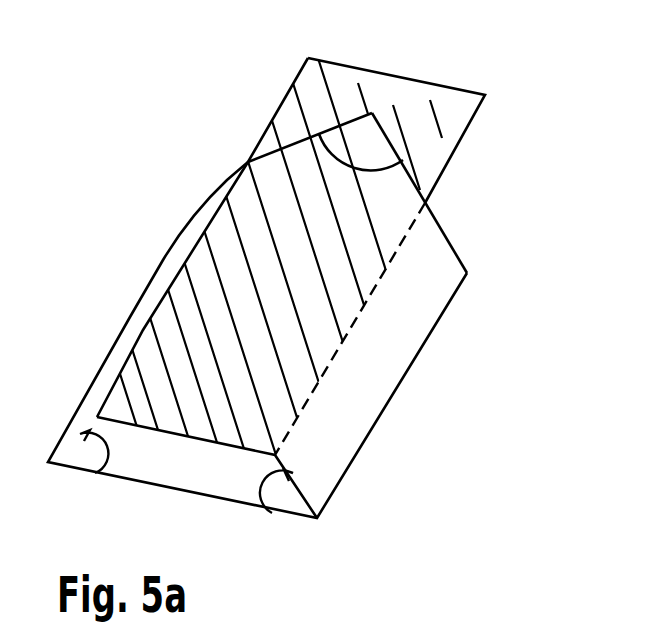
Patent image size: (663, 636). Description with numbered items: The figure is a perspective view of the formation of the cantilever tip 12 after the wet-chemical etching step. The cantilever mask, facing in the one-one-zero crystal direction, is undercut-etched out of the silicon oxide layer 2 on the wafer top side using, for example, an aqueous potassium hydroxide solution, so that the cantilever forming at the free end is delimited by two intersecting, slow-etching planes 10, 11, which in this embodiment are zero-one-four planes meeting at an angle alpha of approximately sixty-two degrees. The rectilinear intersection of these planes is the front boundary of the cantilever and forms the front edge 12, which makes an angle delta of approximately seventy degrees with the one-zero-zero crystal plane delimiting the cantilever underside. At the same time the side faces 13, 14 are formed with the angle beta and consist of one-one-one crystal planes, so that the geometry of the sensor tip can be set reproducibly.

The silicon oxide layer 2 is at (447, 107).
The slow-etching plane 10 is at (263, 140).
The slow-etching plane 11 is at (426, 206).
The cantilever tip 12 is at (371, 113).
The side face 13 is at (375, 358).
The side face 14 is at (140, 318).